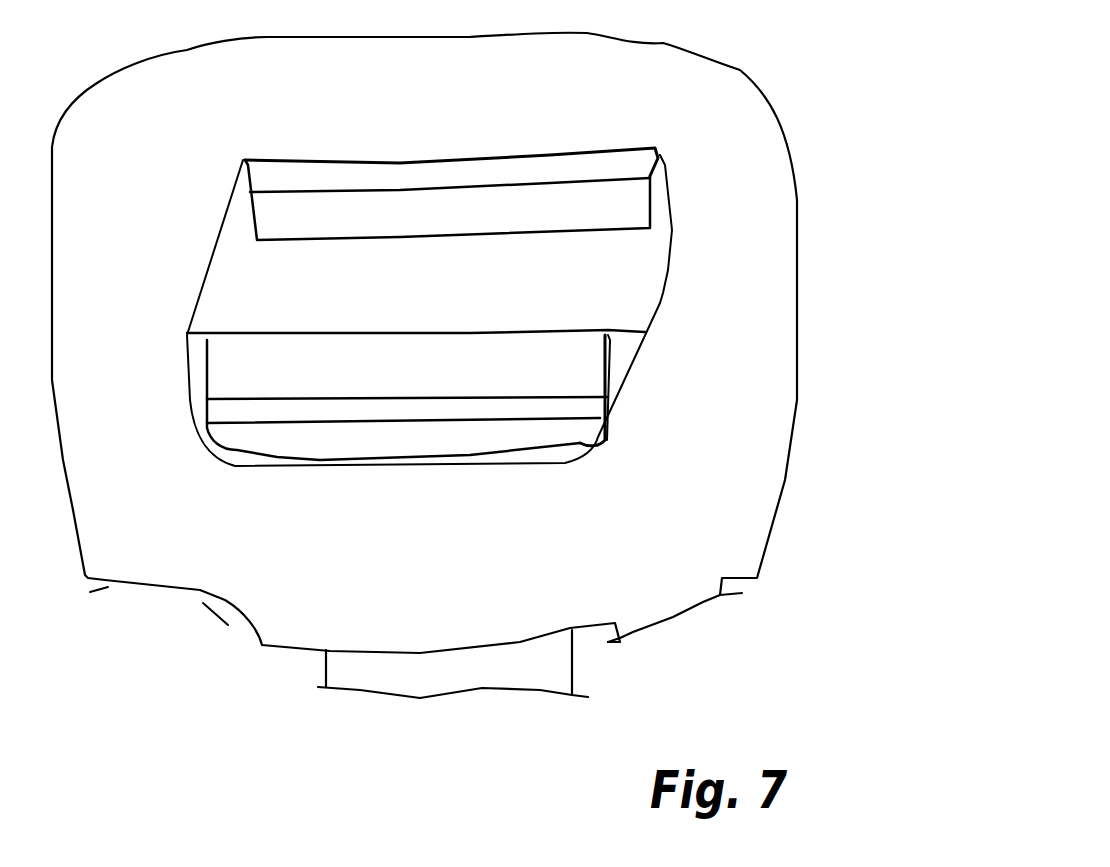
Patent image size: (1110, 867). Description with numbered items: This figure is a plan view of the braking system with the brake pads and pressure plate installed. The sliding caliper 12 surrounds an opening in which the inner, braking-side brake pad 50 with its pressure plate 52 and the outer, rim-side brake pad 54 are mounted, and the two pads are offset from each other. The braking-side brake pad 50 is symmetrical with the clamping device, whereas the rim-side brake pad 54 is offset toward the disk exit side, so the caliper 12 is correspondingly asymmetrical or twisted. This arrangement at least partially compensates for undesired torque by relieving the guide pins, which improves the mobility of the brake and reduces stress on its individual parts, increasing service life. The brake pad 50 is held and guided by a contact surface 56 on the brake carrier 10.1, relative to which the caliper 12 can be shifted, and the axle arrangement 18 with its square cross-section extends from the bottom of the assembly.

The sliding caliper 12 is at (728, 58).
The brake carrier 10.1 is at (627, 352).
The axle arrangement 18 is at (548, 661).
The braking-side brake pad 50 is at (241, 334).
The pressure plate 52 is at (303, 447).
The rim-side brake pad 54 is at (462, 240).
The contact surface 56 is at (603, 367).